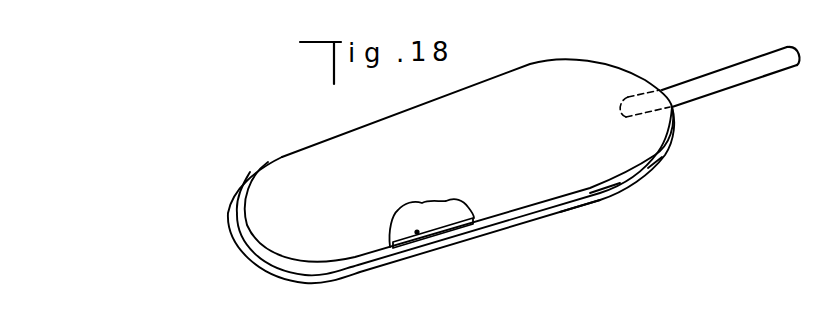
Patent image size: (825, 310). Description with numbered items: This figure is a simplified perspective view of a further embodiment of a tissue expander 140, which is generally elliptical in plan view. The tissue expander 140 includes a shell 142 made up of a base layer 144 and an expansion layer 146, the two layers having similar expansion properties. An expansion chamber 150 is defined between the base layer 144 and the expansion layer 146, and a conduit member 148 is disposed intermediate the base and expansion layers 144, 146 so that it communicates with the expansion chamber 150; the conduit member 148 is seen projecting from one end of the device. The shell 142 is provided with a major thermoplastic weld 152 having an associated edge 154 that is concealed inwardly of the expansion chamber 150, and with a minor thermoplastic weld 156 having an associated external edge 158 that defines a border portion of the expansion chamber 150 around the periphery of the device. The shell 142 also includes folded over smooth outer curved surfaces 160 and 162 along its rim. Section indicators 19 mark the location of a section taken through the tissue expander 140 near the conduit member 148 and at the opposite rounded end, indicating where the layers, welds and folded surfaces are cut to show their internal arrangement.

The section line 19- 19 is at (740, 112).
The tissue expander 140 is at (482, 175).
The shell 142 is at (490, 74).
The base layer 144 is at (530, 223).
The expansion layer 146 is at (403, 127).
The conduit member 148 is at (693, 97).
The expansion chamber 150 is at (440, 200).
The major thermoplastic weld 152 is at (447, 230).
The edge 154 is at (417, 235).
The minor thermoplastic weld 156 is at (225, 205).
The external edge 158 is at (260, 262).
The folded over smooth outer curved surface 160 is at (662, 160).
The folded over smooth outer curved surface 162 is at (610, 190).